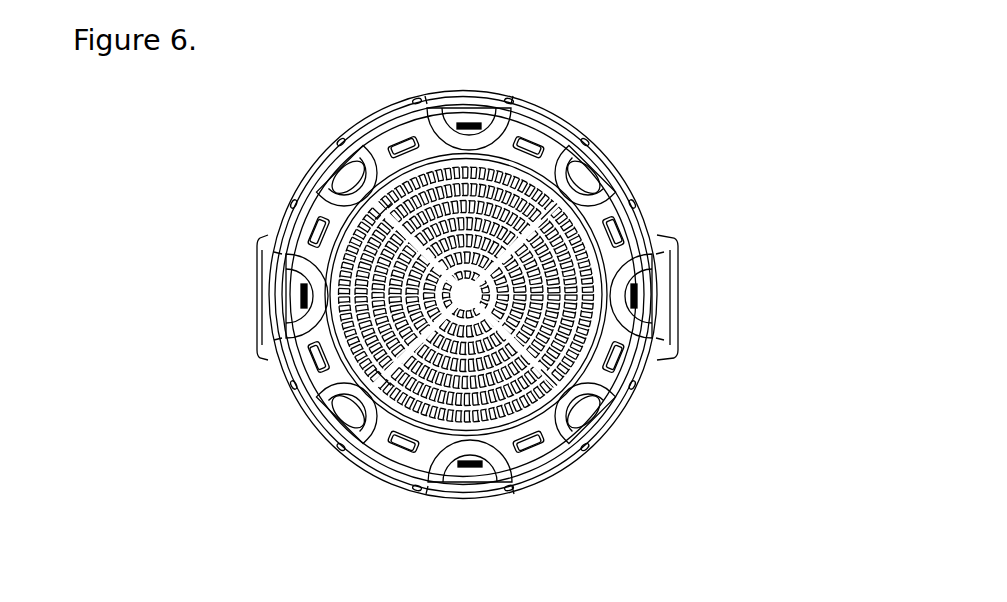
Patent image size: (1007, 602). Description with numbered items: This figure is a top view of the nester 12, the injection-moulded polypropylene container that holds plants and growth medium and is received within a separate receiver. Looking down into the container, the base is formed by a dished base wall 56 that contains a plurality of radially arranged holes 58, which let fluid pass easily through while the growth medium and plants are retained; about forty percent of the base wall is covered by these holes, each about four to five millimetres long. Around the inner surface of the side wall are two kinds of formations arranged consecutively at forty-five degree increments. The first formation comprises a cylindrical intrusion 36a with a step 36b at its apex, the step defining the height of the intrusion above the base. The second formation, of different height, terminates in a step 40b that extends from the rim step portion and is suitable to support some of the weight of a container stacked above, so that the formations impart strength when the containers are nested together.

The nester 12 is at (740, 92).
The step 40b is at (465, 118).
The cylindrical intrusion 36a is at (325, 196).
The step 36b is at (575, 175).
The dished base wall 56 is at (542, 218).
The holes 58 is at (560, 376).